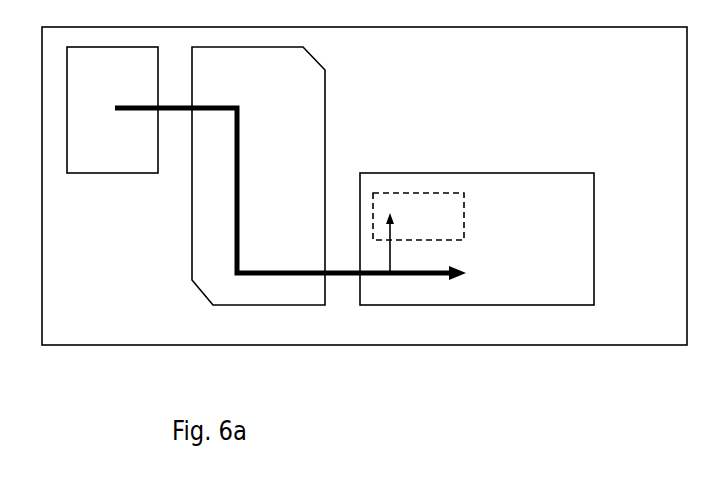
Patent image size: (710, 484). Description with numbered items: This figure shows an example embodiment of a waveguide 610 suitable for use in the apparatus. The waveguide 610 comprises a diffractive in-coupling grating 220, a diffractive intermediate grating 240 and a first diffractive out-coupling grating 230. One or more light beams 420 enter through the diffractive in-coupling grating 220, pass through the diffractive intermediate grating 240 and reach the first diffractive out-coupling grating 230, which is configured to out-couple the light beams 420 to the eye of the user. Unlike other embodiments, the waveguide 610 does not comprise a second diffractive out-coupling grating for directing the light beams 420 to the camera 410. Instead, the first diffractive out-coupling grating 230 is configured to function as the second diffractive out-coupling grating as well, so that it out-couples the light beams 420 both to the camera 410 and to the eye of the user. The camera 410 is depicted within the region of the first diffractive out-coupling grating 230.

The waveguide 610 is at (364, 172).
The diffractive in-coupling grating 220 is at (112, 110).
The diffractive intermediate grating 240 is at (258, 176).
The first diffractive out-coupling grating 230 is at (477, 239).
The camera 410 is at (418, 233).
The light beams 420 is at (243, 132).